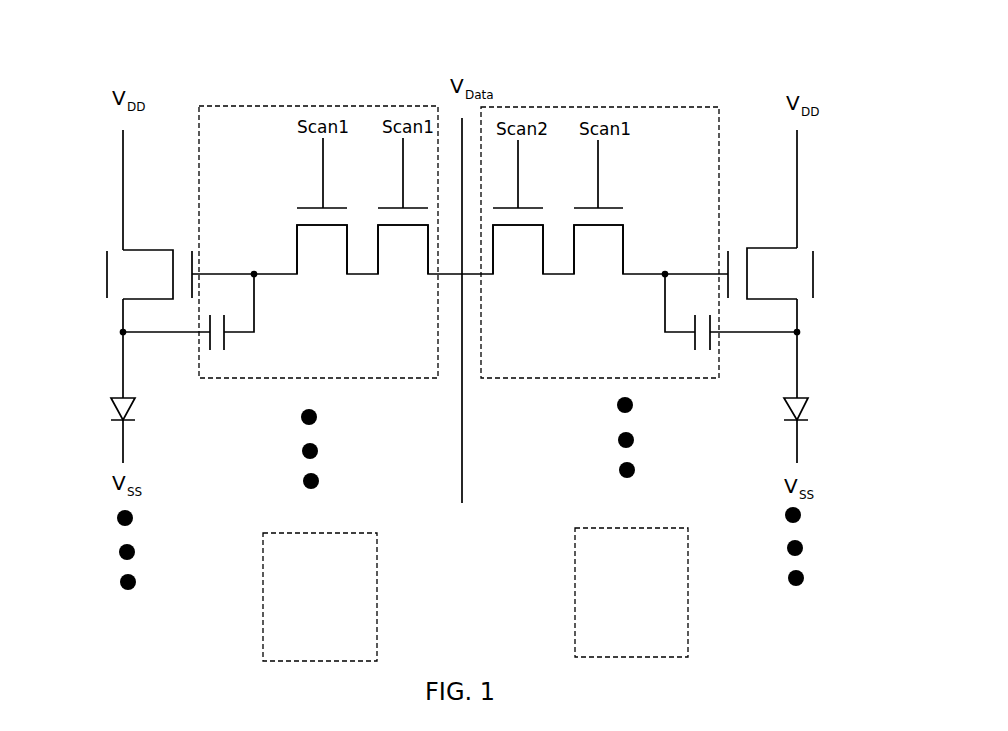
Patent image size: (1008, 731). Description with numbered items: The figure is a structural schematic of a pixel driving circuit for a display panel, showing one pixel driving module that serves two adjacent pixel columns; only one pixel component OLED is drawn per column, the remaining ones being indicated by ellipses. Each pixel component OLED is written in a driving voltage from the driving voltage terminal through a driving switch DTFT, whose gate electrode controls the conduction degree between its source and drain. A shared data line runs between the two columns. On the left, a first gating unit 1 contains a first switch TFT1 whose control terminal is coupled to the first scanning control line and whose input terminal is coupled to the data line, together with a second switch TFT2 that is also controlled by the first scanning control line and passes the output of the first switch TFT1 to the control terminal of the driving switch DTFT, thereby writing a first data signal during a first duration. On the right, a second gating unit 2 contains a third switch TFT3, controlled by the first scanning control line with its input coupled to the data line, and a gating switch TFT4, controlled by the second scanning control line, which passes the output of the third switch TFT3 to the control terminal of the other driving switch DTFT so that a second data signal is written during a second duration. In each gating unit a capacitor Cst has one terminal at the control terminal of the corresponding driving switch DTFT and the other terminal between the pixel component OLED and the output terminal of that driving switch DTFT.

The first gating unit 1 is at (287, 117).
The second gating unit 2 is at (552, 118).
The driving switch DTFT is at (461, 273).
The pixel component OLED is at (462, 430).
The capacitor Cst is at (460, 343).
The first switch TFT1 is at (400, 225).
The second switch TFT2 is at (319, 225).
The third switch TFT3 is at (599, 226).
The gating switch TFT4 is at (520, 226).